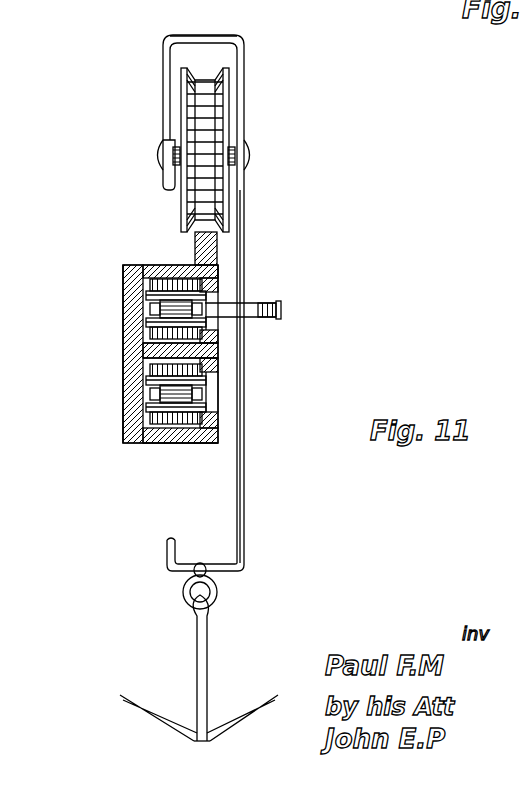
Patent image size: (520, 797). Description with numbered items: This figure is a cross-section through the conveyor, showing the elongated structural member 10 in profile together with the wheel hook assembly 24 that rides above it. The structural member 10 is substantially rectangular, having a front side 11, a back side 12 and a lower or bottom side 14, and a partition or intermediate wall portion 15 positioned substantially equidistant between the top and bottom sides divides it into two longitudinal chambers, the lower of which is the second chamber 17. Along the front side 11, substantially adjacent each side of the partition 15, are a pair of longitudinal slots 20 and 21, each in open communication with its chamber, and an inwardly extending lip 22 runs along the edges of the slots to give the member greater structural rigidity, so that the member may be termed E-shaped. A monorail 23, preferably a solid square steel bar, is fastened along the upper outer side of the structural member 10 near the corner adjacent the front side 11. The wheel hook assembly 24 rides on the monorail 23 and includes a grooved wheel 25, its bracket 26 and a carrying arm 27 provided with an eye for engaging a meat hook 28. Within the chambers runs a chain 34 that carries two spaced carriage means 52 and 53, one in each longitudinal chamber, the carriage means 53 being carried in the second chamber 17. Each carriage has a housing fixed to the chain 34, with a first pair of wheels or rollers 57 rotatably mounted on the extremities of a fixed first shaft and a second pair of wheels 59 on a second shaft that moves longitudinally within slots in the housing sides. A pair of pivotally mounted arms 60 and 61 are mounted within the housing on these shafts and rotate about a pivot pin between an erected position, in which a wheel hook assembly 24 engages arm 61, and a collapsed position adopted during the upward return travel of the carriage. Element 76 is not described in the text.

The elongated structural member 10 is at (121, 353).
The front side 11 is at (222, 274).
The back side 12 is at (123, 300).
The lower or bottom side 14 is at (186, 443).
The partition or intermediate wall portion 15 is at (214, 364).
The second chamber 17 is at (148, 370).
The longitudinal opening or slot 20 is at (212, 325).
The longitudinal opening or slot 21 is at (214, 400).
The inwardly extending lip 22 is at (214, 373).
The monorail 23 is at (196, 252).
The wheel hook assembly 24 is at (248, 94).
The grooved wheel 25 is at (182, 203).
The bracket 26 is at (205, 36).
The carrying arm 27 is at (236, 566).
The meat hook 28 is at (196, 655).
The chain 34 is at (153, 313).
The carriage means 52 is at (153, 322).
The carriage means 53 is at (145, 392).
The first pair of wheels or rollers 57 is at (150, 280).
The second pair of wheels 59 is at (163, 443).
The pivotally mounted arm 60 is at (255, 303).
The pivotally mounted arm 61 is at (283, 310).
The bearing plate 76 is at (156, 288).